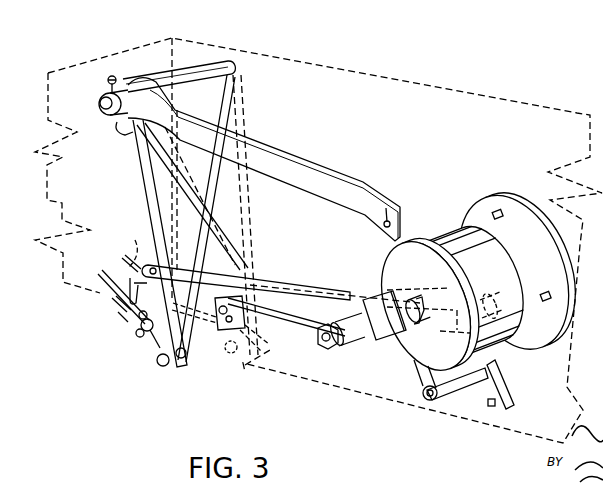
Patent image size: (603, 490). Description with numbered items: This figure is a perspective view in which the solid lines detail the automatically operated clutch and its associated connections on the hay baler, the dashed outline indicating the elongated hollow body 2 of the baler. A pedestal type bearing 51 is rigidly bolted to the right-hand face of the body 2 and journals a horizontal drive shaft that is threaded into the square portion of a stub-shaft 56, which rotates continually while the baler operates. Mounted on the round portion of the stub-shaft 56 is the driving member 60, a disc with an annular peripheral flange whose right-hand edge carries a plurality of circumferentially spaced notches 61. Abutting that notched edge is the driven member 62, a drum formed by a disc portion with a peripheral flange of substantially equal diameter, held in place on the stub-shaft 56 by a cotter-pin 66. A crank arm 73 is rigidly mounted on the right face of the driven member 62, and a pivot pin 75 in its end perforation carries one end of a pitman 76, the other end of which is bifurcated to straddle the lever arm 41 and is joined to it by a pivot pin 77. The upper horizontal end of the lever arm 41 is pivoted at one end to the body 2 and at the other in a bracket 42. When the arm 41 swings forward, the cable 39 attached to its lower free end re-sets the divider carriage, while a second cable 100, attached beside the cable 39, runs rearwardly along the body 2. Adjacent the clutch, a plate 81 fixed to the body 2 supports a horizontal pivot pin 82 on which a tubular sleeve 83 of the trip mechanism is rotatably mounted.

The body 2 is at (388, 92).
The cable 39 is at (138, 250).
The lever arm 41 is at (196, 66).
The bracket 42 is at (258, 150).
The pedestal type bearing 51 is at (510, 223).
The stub-shaft 56 is at (418, 323).
The driving member 60 is at (458, 270).
The notches 61 is at (482, 260).
The driven member 62 is at (380, 260).
The cotter-pin 66 is at (413, 299).
The crank arm 73 is at (380, 330).
The pivot pin 75 is at (318, 343).
The pitman 76 is at (343, 283).
The pivot pin 77 is at (137, 291).
The plate 81 is at (502, 387).
The pivot pin 82 is at (423, 397).
The tubular sleeve 83 is at (457, 400).
The second cable 100 is at (118, 304).